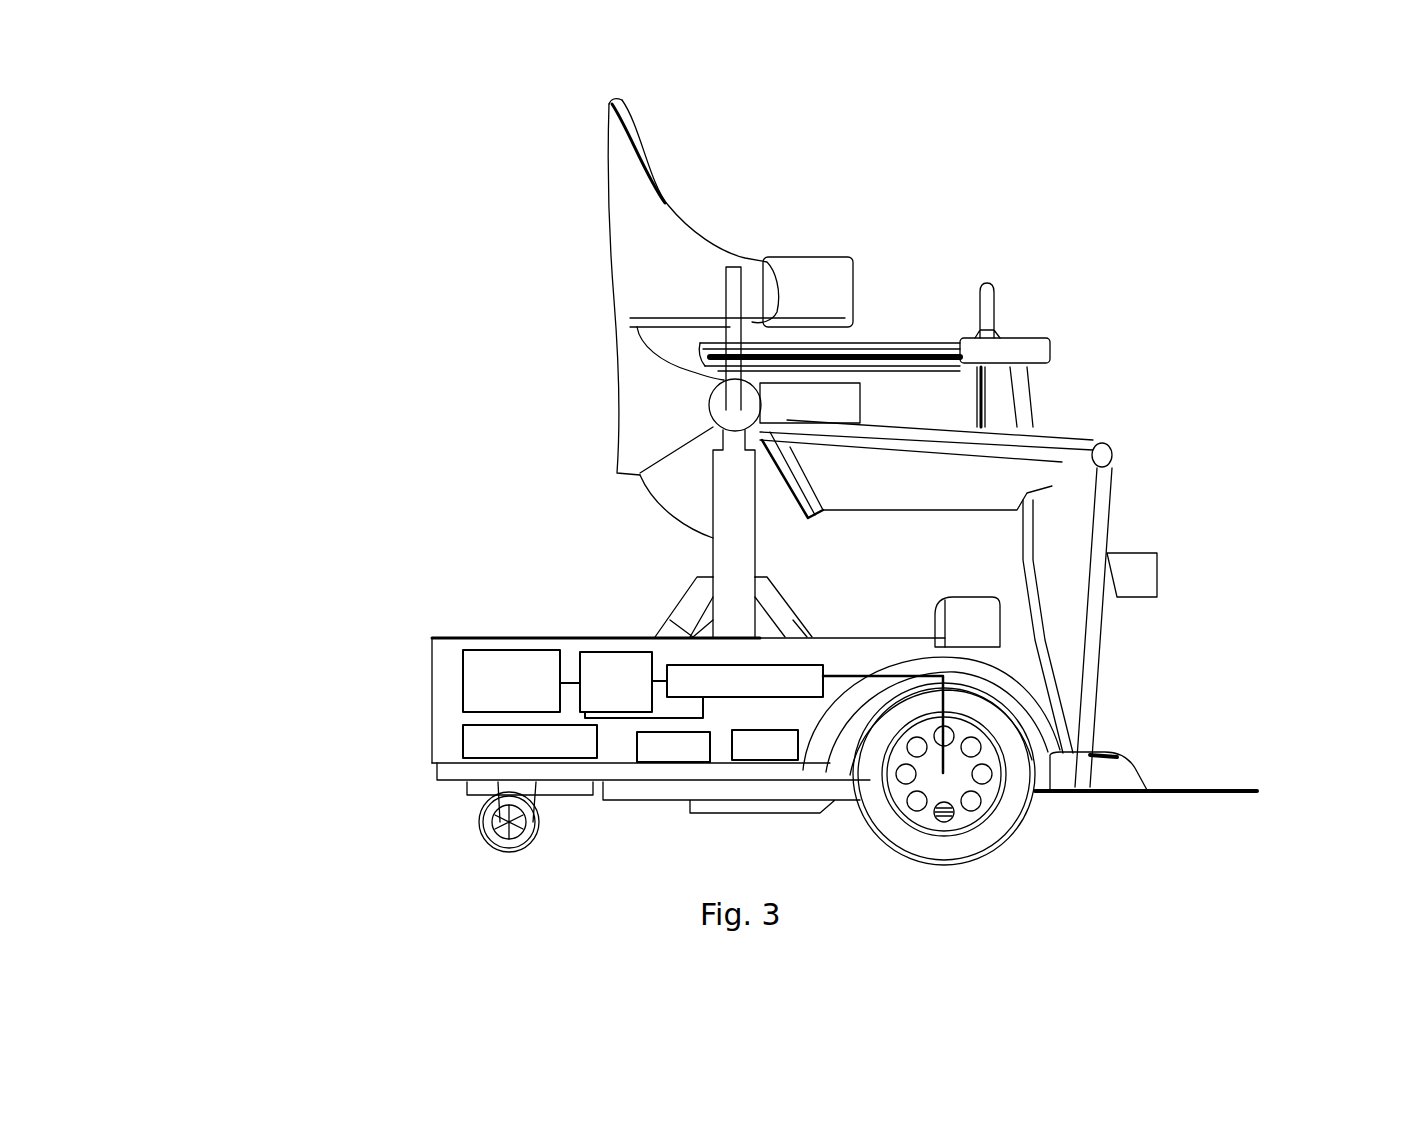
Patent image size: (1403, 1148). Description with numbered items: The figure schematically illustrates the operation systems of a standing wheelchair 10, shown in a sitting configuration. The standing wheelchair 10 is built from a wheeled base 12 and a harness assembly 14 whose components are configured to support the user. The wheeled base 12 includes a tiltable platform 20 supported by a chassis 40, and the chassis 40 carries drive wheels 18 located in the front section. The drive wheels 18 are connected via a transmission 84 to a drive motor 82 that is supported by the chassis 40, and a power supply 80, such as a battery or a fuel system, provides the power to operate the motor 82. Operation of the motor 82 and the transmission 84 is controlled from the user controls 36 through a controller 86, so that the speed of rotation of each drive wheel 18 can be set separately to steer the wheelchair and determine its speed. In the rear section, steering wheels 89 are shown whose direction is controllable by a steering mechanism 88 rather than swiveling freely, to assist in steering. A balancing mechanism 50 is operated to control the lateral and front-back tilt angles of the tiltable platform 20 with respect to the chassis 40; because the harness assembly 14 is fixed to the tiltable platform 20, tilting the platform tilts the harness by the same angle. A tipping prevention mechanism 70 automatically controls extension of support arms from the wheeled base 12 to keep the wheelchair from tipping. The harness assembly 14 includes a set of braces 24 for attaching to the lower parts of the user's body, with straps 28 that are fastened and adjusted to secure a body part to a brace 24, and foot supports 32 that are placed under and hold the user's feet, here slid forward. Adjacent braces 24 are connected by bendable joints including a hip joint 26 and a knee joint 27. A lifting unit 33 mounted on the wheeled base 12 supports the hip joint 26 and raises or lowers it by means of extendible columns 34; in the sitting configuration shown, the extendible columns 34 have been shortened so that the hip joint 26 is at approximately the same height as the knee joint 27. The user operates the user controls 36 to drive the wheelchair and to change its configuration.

The standing wheelchair 10 is at (1200, 280).
The wheeled base 12 is at (370, 683).
The harness assembly 14 is at (540, 240).
The drive wheels 18 is at (1010, 830).
The tiltable platform 20 is at (490, 635).
The braces 24 is at (605, 150).
The hip joint 26 is at (715, 408).
The knee joint 27 is at (1112, 450).
The straps 28 is at (855, 260).
The foot supports 32 is at (1175, 790).
The lifting unit 33 is at (593, 510).
The extendible columns 34 is at (712, 548).
The user controls 36 is at (1012, 330).
The chassis 40 is at (437, 768).
The balancing mechanism 50 is at (640, 742).
The tipping prevention mechanism 70 is at (755, 755).
The power supply 80 is at (470, 685).
The drive motor 82 is at (607, 648).
The transmission 84 is at (798, 662).
The controller 86 is at (470, 745).
The steering mechanism 88 is at (470, 790).
The steering wheels 89 is at (485, 830).